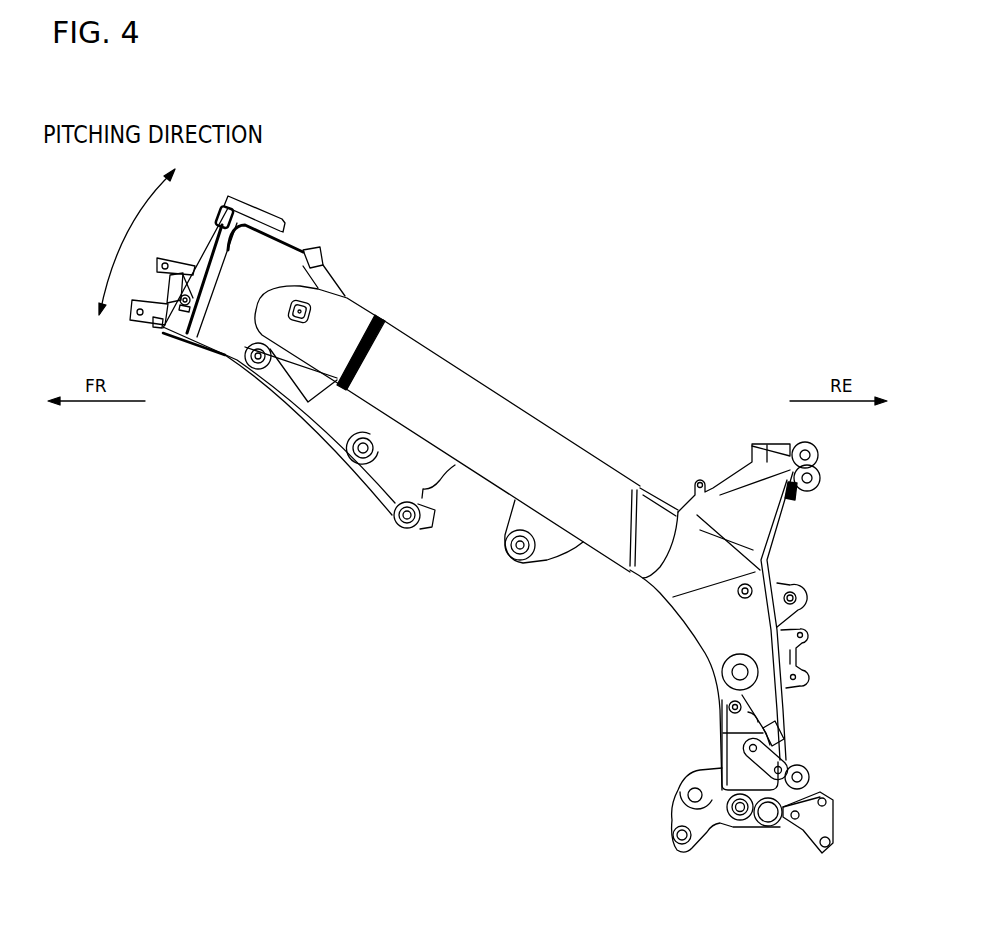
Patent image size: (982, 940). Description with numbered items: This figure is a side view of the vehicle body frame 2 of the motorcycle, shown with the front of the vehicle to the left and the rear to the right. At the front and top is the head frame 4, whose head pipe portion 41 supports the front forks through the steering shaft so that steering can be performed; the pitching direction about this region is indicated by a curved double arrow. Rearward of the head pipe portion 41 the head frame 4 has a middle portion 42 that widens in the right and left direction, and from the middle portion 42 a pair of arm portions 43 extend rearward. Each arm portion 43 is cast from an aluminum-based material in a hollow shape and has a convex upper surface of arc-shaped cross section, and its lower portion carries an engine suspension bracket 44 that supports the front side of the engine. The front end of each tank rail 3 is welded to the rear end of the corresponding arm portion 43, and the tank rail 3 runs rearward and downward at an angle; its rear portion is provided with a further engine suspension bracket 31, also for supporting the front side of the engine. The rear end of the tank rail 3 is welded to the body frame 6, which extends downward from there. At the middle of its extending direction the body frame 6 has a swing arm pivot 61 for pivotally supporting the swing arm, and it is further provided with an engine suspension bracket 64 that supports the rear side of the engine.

The vehicle body frame 2 is at (598, 410).
The tank rail 3 is at (467, 383).
The head frame 4 is at (305, 220).
The head pipe portion 41 is at (233, 196).
The middle portion 42 is at (313, 272).
The arm portion 43 is at (353, 300).
The engine suspension bracket 44 is at (388, 425).
The engine suspension bracket 31 is at (553, 552).
The body frame 6 is at (803, 541).
The swing arm pivot 61 is at (737, 672).
The engine suspension bracket 64 is at (673, 810).